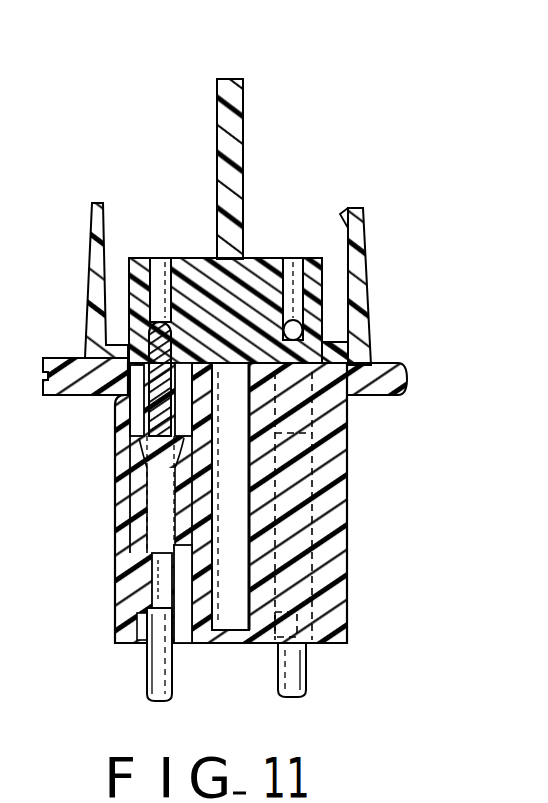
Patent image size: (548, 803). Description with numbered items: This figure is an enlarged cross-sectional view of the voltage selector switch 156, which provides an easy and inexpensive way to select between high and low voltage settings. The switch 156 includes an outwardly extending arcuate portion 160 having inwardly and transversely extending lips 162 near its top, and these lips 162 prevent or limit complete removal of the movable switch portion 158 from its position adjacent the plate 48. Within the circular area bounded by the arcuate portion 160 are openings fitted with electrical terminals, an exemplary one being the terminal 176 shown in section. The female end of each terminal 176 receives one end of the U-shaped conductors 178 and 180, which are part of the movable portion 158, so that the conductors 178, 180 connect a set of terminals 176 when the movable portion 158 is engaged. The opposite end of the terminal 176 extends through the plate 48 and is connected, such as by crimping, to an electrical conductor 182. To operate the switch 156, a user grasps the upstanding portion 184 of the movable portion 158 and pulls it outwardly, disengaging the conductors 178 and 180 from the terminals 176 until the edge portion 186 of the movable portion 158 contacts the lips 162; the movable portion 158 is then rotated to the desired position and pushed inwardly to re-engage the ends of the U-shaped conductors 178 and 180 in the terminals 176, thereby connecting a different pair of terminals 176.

The voltage selector switch 156 is at (131, 84).
The upstanding portion 184 is at (243, 90).
The movable switch portion 158 is at (243, 270).
The lips 162 is at (346, 234).
The U-shaped conductor 180 is at (298, 260).
The arcuate portion 160 is at (92, 240).
The edge portion 186 is at (368, 294).
The U-shaped conductor 178 is at (113, 398).
The electrical terminal 176 is at (130, 453).
The plate 48 is at (396, 376).
The electrical conductor 182 is at (147, 679).